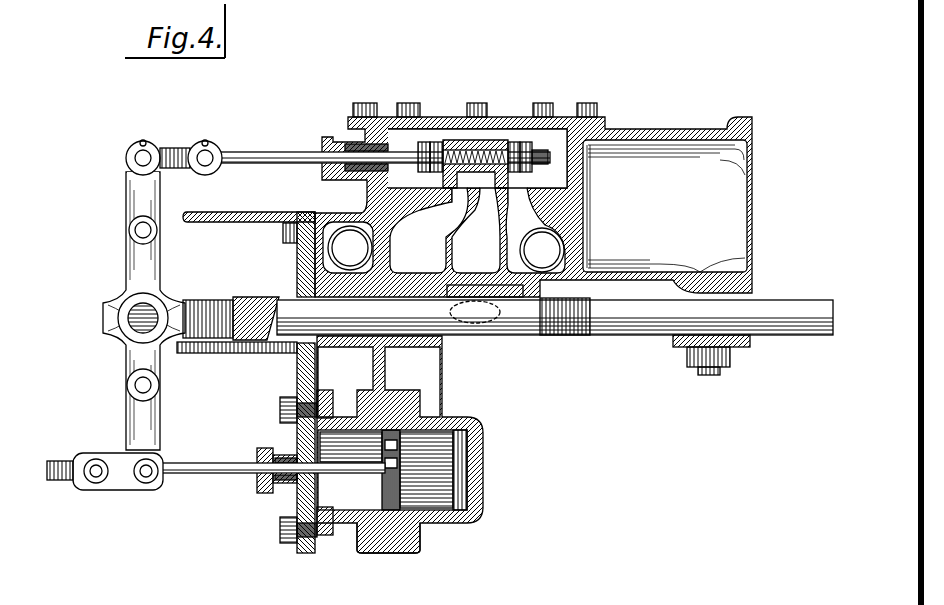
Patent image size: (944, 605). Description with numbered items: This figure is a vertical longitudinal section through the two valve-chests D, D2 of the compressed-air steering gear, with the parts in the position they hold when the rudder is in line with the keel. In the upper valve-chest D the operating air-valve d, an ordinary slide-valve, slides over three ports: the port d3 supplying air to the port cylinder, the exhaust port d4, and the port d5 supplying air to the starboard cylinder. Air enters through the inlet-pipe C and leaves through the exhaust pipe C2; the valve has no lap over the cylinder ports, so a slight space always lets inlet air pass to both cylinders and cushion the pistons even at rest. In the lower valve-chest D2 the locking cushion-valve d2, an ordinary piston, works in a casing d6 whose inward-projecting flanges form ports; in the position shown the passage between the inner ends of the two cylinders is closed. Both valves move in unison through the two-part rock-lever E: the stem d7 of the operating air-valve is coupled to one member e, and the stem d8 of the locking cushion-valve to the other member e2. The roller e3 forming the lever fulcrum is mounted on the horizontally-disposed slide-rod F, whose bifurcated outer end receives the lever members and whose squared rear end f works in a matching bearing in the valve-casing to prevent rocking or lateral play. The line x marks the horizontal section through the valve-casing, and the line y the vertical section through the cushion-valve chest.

The valve-chest D is at (533, 186).
The operating air-valve d is at (452, 140).
The locking cushion-valve d2 is at (357, 526).
The port to port cylinder d3 is at (429, 230).
The exhaust port d4 is at (476, 230).
The port to starboard cylinder d5 is at (535, 230).
The casing d6 is at (482, 497).
The stem of operating air-valve d7 is at (259, 153).
The stem of locking cushion-valve d8 is at (209, 464).
The valve-chest D2 is at (540, 431).
The inlet-pipe C is at (297, 256).
The exhaust pipe C2 is at (468, 340).
The two-part rock-lever E is at (134, 311).
The lever member e is at (140, 203).
The lever member e2 is at (140, 413).
The roller e3 is at (118, 318).
The slide-rod F is at (498, 337).
The squared portion of slide-rod f is at (798, 328).
The section line x- x is at (296, 243).
The section line y- y is at (392, 390).